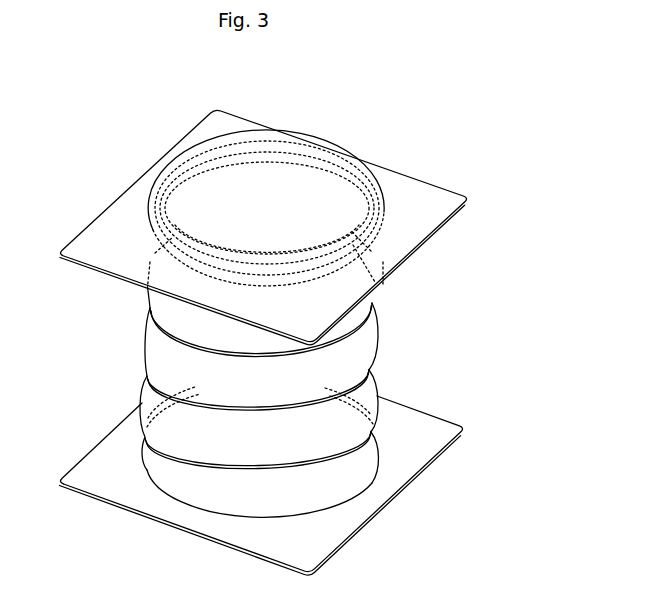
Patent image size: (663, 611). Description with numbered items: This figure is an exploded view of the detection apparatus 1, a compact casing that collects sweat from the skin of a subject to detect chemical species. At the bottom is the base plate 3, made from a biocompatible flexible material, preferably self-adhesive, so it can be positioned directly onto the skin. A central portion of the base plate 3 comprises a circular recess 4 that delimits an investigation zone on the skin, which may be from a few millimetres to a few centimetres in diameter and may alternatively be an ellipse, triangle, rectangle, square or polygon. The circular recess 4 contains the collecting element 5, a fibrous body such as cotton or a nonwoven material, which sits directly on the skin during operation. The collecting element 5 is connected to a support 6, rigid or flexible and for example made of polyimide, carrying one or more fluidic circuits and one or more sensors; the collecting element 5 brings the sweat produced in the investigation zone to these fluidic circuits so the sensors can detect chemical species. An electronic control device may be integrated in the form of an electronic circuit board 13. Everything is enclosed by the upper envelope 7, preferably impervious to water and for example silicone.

The detection apparatus 1 is at (480, 138).
The base plate 3 is at (337, 545).
The circular recess 4 is at (176, 500).
The collecting element 5 is at (145, 386).
The support 6 is at (377, 348).
The upper envelope 7 is at (423, 192).
The electronic circuit board 13 is at (148, 294).